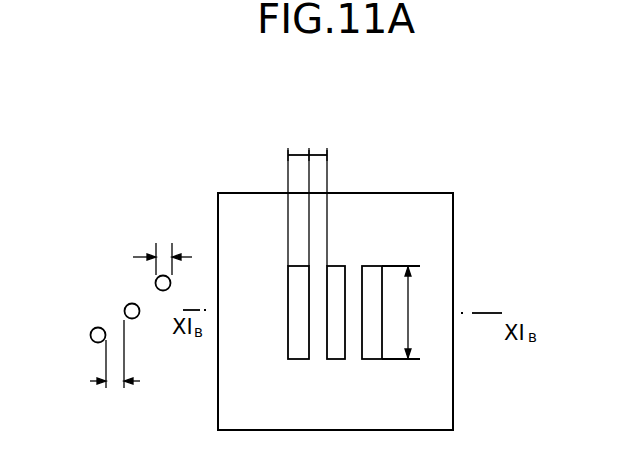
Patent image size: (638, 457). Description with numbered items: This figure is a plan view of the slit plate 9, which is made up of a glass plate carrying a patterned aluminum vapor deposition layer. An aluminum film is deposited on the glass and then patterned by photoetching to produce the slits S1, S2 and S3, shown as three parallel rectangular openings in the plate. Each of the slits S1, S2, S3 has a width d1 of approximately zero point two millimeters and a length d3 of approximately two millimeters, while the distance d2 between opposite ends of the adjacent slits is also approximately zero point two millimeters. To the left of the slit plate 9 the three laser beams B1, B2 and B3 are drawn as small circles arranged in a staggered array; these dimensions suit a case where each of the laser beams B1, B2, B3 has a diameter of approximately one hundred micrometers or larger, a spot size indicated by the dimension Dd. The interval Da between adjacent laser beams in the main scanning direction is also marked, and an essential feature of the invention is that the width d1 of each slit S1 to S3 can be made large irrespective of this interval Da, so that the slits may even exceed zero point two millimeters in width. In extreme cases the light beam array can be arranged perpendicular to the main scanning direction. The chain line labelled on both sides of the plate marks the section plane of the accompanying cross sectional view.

The slit plate 9 is at (454, 238).
The slit S1 is at (297, 361).
The slit S2 is at (335, 361).
The slit S3 is at (373, 361).
The width d1 is at (296, 153).
The distance d2 is at (321, 153).
The length d3 is at (409, 312).
The laser beam B1 is at (171, 284).
The laser beam B2 is at (138, 317).
The laser beam B3 is at (90, 336).
The beam spot diameter Dd is at (148, 254).
The interval Da is at (133, 361).